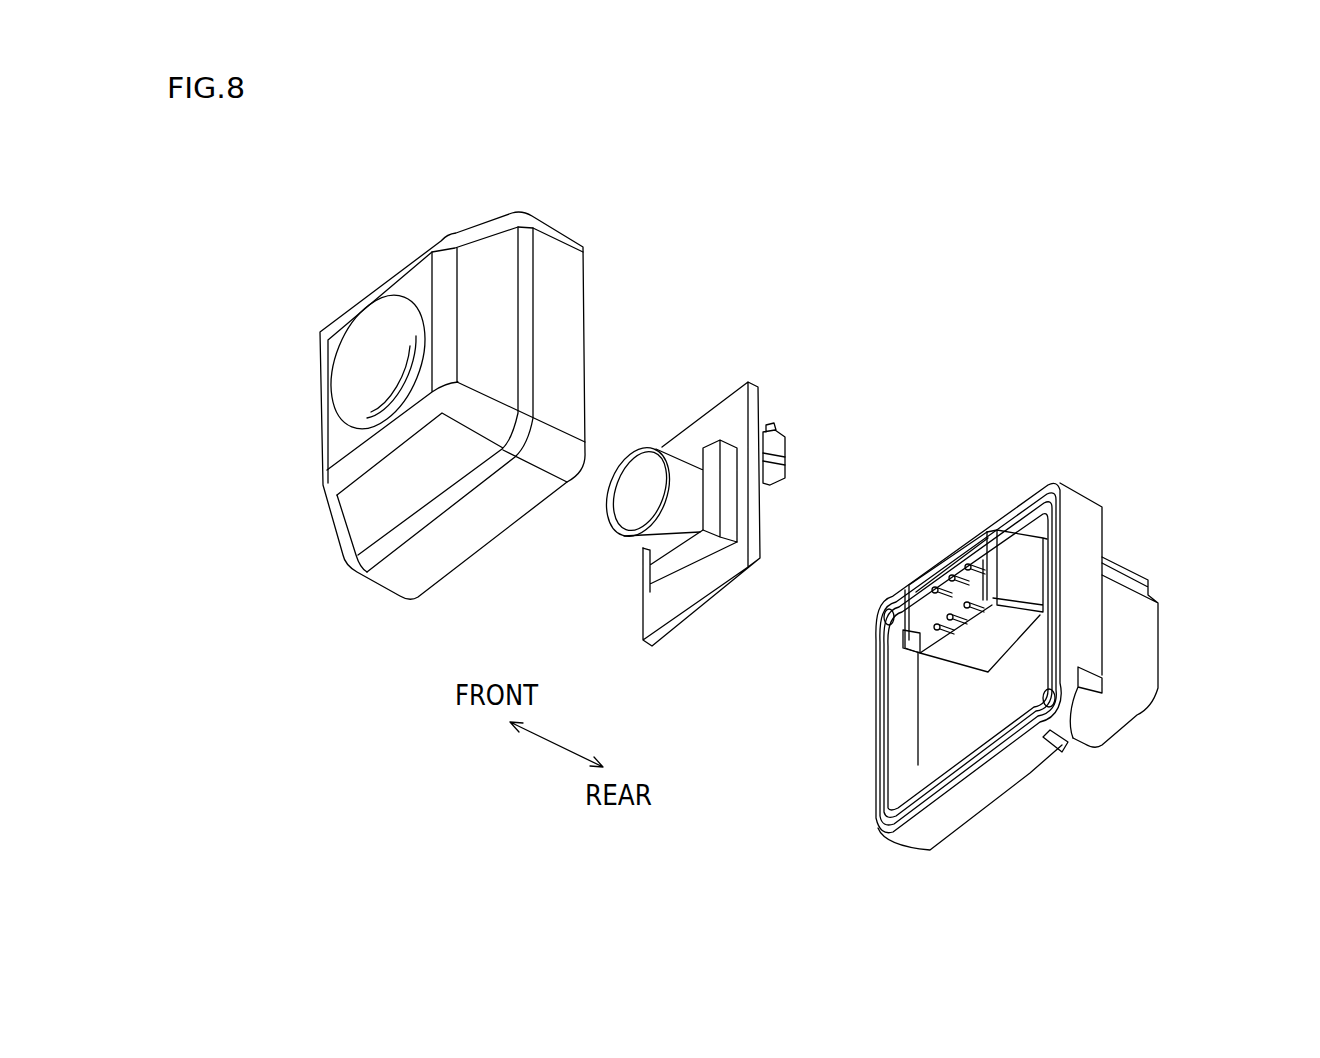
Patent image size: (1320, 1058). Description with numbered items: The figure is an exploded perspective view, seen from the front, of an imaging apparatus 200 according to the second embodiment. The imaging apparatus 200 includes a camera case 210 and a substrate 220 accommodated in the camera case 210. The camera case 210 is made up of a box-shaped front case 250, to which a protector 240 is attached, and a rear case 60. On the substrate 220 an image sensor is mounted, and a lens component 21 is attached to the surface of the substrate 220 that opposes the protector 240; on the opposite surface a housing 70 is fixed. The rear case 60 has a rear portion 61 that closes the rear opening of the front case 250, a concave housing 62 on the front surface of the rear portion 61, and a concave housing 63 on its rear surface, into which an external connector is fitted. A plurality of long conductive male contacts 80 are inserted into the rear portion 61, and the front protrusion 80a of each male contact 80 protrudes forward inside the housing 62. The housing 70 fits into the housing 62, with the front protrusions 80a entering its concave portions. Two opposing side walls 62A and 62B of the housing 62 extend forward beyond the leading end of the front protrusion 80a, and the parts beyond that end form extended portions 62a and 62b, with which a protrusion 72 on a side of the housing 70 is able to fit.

The imaging apparatus 200 is at (888, 148).
The camera case 210 is at (1048, 254).
The front case 250 is at (624, 288).
The protector 240 is at (357, 363).
The substrate 220 is at (702, 430).
The lens component 21 is at (655, 538).
The housing 70 is at (790, 434).
The protrusion 72 is at (773, 463).
The rear case 60 is at (1082, 450).
The rear portion 61 is at (930, 762).
The housing 62 is at (955, 548).
The side wall 62A is at (1005, 568).
The extended portion 62a is at (983, 533).
The side wall 62B is at (922, 625).
The extended portion 62b is at (910, 640).
The housing 63 is at (1147, 642).
The male contact 80 is at (884, 599).
The front protrusion 80a is at (912, 591).